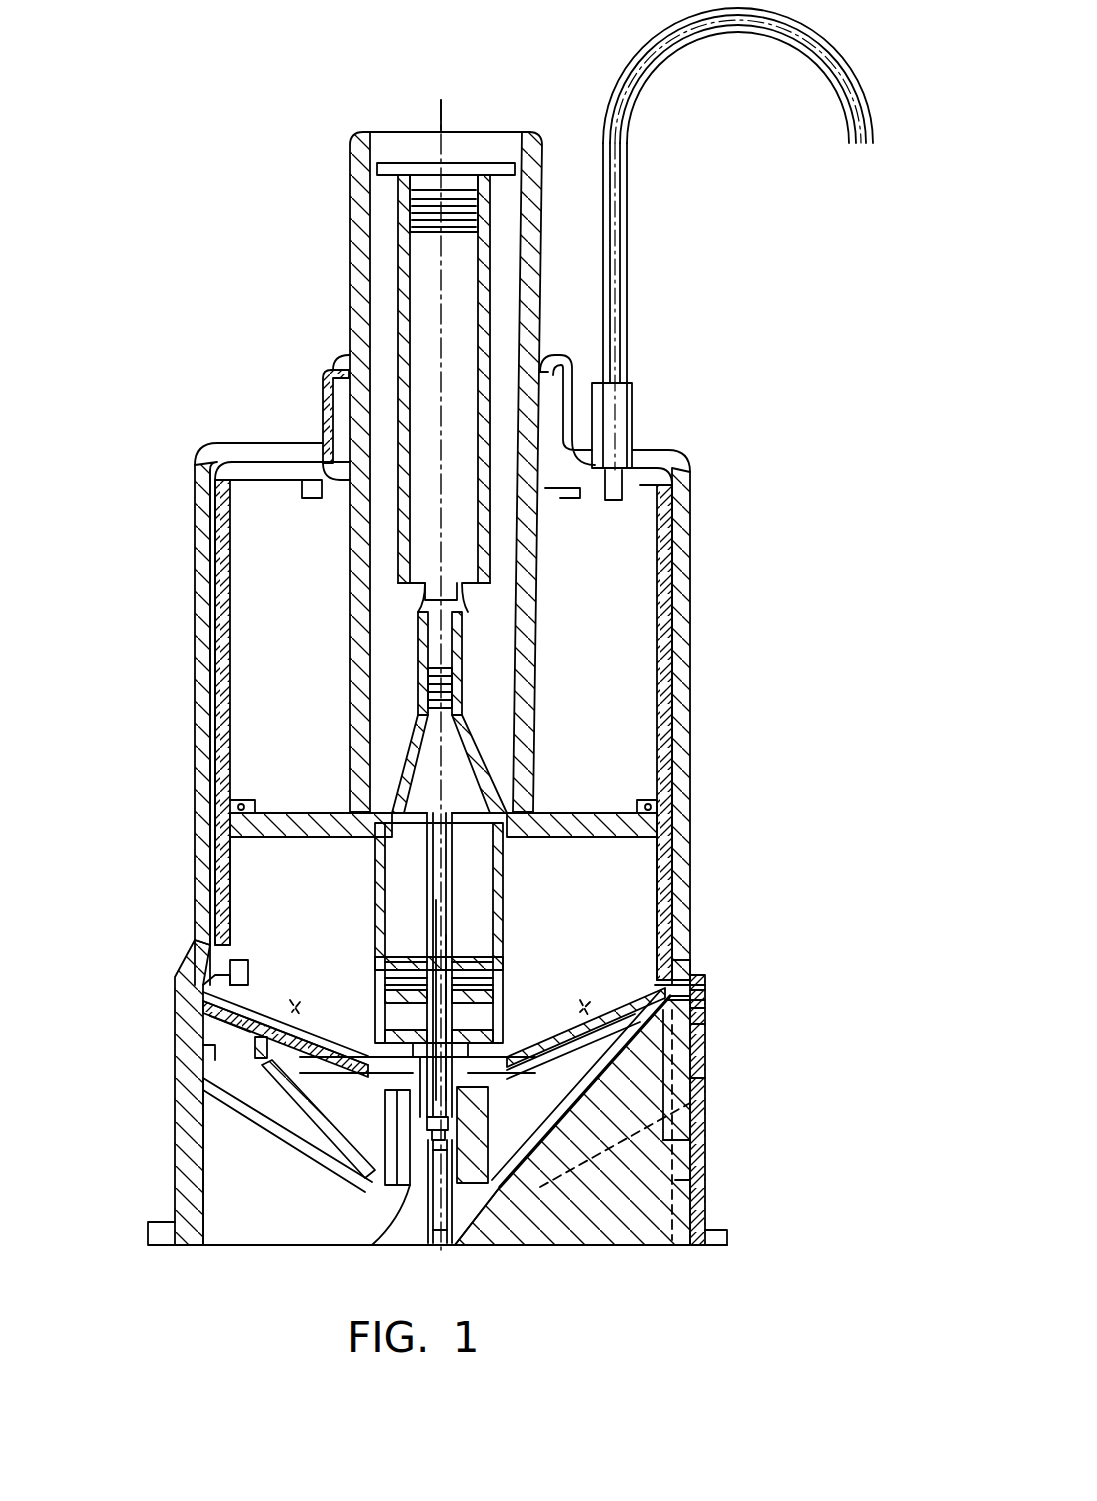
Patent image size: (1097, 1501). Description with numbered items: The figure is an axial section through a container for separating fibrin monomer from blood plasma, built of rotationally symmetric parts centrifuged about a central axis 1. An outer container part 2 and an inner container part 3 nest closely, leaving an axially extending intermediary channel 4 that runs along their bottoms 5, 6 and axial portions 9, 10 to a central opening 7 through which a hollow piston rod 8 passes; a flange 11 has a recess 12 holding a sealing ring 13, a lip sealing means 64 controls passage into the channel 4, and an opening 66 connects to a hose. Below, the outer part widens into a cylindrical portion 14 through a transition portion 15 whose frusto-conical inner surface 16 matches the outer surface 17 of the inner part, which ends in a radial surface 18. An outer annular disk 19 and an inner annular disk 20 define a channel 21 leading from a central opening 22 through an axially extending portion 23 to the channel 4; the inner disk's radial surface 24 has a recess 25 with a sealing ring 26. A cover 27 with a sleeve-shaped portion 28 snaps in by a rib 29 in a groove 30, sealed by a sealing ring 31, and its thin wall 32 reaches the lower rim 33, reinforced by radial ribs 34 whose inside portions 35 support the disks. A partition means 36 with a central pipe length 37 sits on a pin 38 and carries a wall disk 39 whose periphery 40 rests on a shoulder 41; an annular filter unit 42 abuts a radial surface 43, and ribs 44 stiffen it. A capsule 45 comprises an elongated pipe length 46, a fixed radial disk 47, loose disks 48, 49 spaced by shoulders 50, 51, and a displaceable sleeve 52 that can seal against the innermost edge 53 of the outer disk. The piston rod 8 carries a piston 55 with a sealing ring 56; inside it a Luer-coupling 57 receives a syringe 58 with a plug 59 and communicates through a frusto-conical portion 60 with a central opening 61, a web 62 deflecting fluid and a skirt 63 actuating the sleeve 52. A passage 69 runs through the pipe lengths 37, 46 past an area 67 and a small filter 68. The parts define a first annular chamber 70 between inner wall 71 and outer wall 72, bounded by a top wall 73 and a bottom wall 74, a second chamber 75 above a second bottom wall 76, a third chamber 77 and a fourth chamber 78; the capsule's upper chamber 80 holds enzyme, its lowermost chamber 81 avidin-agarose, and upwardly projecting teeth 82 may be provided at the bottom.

The central axis 1 is at (452, 132).
The outer container part 2 is at (200, 720).
The inner container part 3 is at (218, 700).
The intermediary channel 4 is at (205, 645).
The bottom 5 is at (630, 240).
The bottom 6 is at (270, 490).
The central opening 7 is at (322, 398).
The hollow piston rod 8 is at (358, 262).
The axially extending portion 9 is at (332, 375).
The axially extending portion 10 is at (320, 412).
The radially extending flange 11 is at (552, 352).
The recess 12 is at (548, 370).
The sealing ring 13 is at (598, 372).
The cylindrical portion 14 is at (700, 1108).
The transition portion 15 is at (690, 968).
The frusto-conical inner surface 16 is at (688, 960).
The outer surface 17 is at (692, 985).
The radial surface 18 is at (205, 965).
The outer annular disk 19 is at (258, 1048).
The inner annular disk 20 is at (208, 1015).
The channel 21 is at (208, 1000).
The central opening 22 is at (368, 1082).
The axially extending portion 23 is at (200, 998).
The radial surface 24 is at (705, 995).
The recess 25 is at (705, 1008).
The sealing ring 26 is at (703, 1024).
The cover 27 is at (680, 1150).
The sleeve-shaped portion 28 is at (185, 1175).
The circumferential rib 29 is at (203, 1232).
The circumferential groove 30 is at (172, 1245).
The sealing ring 31 is at (215, 1012).
The wall 32 is at (228, 985).
The lower rim 33 is at (730, 1242).
The reinforcing radial rib 34 is at (575, 1195).
The inside rib portion 35 is at (668, 1050).
The partition means 36 is at (468, 1180).
The central pipe length 37 is at (437, 1150).
The pin 38 is at (447, 1248).
The wall disk 39 is at (625, 1190).
The periphery 40 is at (660, 1100).
The shoulder 41 is at (692, 1180).
The annular filter unit 42 is at (210, 1060).
The radially shaped surface 43 is at (692, 1078).
The reinforcing radial ribs 44 is at (500, 1200).
The capsule 45 is at (460, 945).
The elongated pipe length 46 is at (455, 905).
The radial disk 47 is at (478, 990).
The radial annular disk 48 is at (378, 930).
The radial annular disk 49 is at (393, 1008).
The circumferential shoulder 50 is at (475, 965).
The circumferential shoulder 51 is at (470, 1013).
The displaceable sleeve 52 is at (380, 998).
The innermost edge 53 is at (500, 1078).
The piston 55 is at (588, 818).
The sealing ring 56 is at (660, 812).
The Luer-coupling 57 is at (462, 653).
The syringe 58 is at (400, 588).
The piston-acting plug 59 is at (470, 180).
The frusto-conical portion 60 is at (497, 780).
The central opening 61 is at (470, 830).
The web 62 is at (437, 682).
The skirt 63 is at (372, 870).
The lip sealing means 64 is at (560, 500).
The opening 66 is at (612, 493).
The area 67 is at (432, 1140).
The filter 68 is at (420, 1140).
The passage 69 is at (456, 925).
The first annular chamber 70 is at (660, 618).
The cylindrical inner wall 71 is at (540, 605).
The cylindrical outer wall 72 is at (680, 688).
The top wall 73 is at (228, 457).
The bottom wall 74 is at (672, 795).
The second chamber 75 is at (650, 868).
The second bottom wall 76 is at (640, 988).
The third chamber 77 is at (290, 1140).
The fourth chamber 78 is at (255, 1110).
The upper chamber 80 is at (380, 960).
The lowermost chamber 81 is at (380, 985).
The teeth 82 is at (298, 1004).